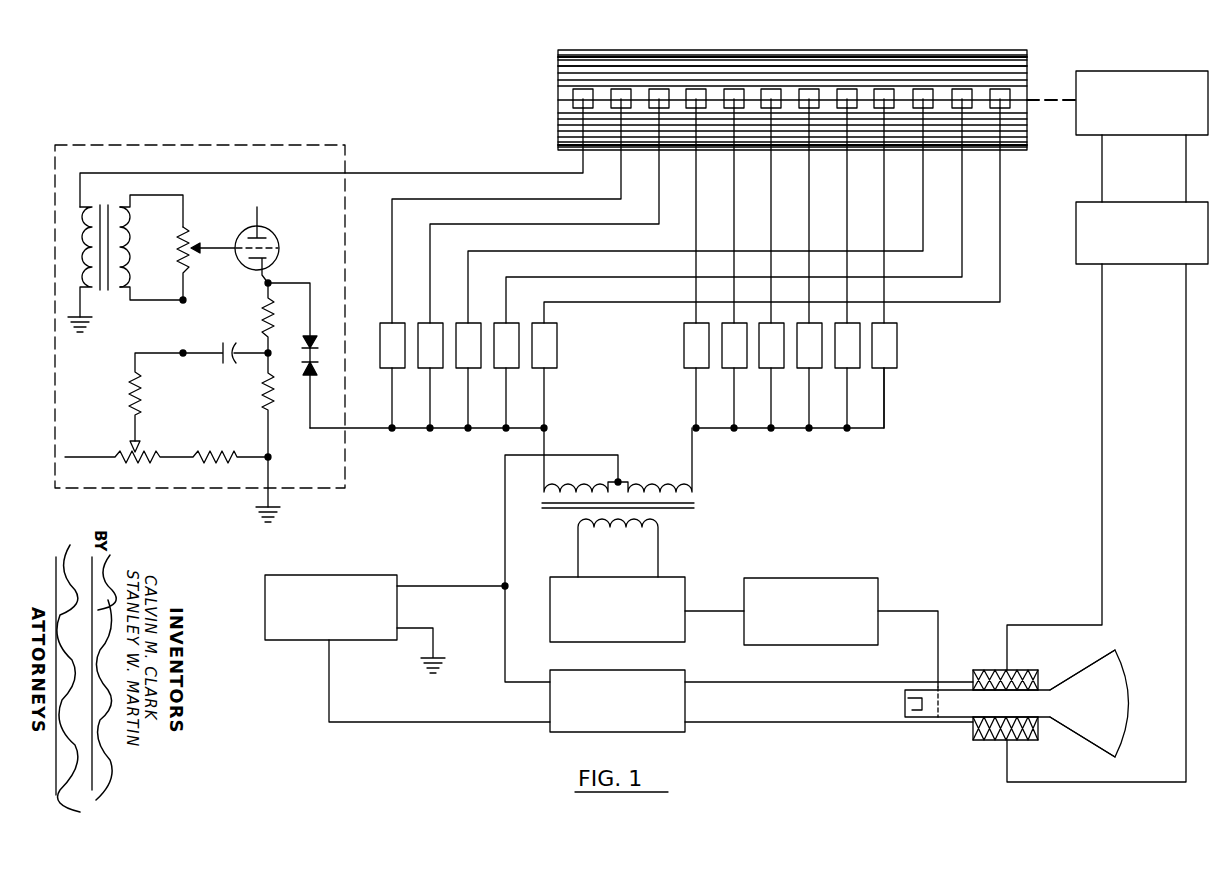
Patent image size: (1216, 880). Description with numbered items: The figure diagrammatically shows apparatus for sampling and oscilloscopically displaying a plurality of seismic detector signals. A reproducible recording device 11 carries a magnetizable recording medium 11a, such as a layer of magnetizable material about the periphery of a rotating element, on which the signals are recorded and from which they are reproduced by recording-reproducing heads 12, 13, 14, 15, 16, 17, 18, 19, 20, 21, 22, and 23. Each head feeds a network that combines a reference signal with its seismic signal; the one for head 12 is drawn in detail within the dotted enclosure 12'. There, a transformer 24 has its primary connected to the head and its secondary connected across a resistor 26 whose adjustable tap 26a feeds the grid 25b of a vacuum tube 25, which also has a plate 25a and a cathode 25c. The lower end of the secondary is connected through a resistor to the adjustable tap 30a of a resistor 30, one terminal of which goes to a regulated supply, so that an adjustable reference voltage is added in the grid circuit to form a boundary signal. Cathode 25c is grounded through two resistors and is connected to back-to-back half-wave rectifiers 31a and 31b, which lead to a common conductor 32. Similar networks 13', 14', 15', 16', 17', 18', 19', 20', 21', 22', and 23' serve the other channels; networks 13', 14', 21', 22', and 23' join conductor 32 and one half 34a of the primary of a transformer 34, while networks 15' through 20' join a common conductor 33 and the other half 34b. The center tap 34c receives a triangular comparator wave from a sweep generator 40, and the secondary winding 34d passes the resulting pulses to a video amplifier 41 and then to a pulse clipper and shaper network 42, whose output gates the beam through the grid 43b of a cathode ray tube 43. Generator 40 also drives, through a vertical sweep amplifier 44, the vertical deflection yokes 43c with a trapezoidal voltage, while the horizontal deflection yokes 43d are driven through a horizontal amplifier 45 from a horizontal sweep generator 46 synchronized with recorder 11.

The reproducible recording device 11 is at (518, 106).
The magnetizable recording medium 11a is at (562, 78).
The recording-reproducing head 12 is at (563, 66).
The network 12' is at (218, 316).
The recording-reproducing head 13 is at (602, 66).
The recording-reproducing head 14 is at (640, 66).
The recording-reproducing head 15 is at (677, 66).
The recording-reproducing head 16 is at (716, 66).
The recording-reproducing head 17 is at (753, 66).
The recording-reproducing head 18 is at (832, 66).
The recording-reproducing head 19 is at (870, 66).
The recording-reproducing head 20 is at (907, 66).
The recording-reproducing head 21 is at (946, 66).
The recording-reproducing head 22 is at (984, 66).
The recording-reproducing head 23 is at (1022, 66).
The network 13' is at (381, 375).
The network 14' is at (419, 375).
The network 15' is at (706, 375).
The network 16' is at (744, 375).
The network 17' is at (781, 375).
The network 18' is at (819, 375).
The network 19' is at (857, 375).
The network 20' is at (894, 375).
The network 21' is at (457, 375).
The network 22' is at (495, 375).
The network 23' is at (533, 375).
The transformer 24 is at (105, 292).
The vacuum tube 25 is at (270, 252).
The plate 25a is at (268, 237).
The grid 25b is at (278, 247).
The cathode 25c is at (262, 272).
The resistor 26 is at (178, 240).
The adjustable tap 26a is at (201, 253).
The resistor 30 is at (125, 463).
The adjustable tap 30a is at (140, 447).
The half-wave rectifier 31a is at (313, 335).
The half-wave rectifier 31b is at (310, 378).
The common conductor 32 is at (405, 431).
The common conductor 33 is at (785, 431).
The transformer 34 is at (616, 555).
The primary winding half 34a is at (596, 486).
The primary winding half 34b is at (640, 486).
The center tap 34c is at (619, 480).
The secondary winding 34d is at (640, 530).
The sweep generator 40 is at (340, 575).
The video amplifier 41 is at (668, 577).
The pulse clipper and shaper network 42 is at (828, 578).
The cathode ray tube 43 is at (1023, 708).
The grid 43b is at (920, 712).
The vertical deflection yokes 43c is at (1043, 688).
The horizontal deflection yokes 43d is at (1000, 670).
The vertical sweep amplifier 44 is at (560, 732).
The horizontal amplifier 45 is at (1116, 202).
The horizontal sweep generator 46 is at (1125, 71).